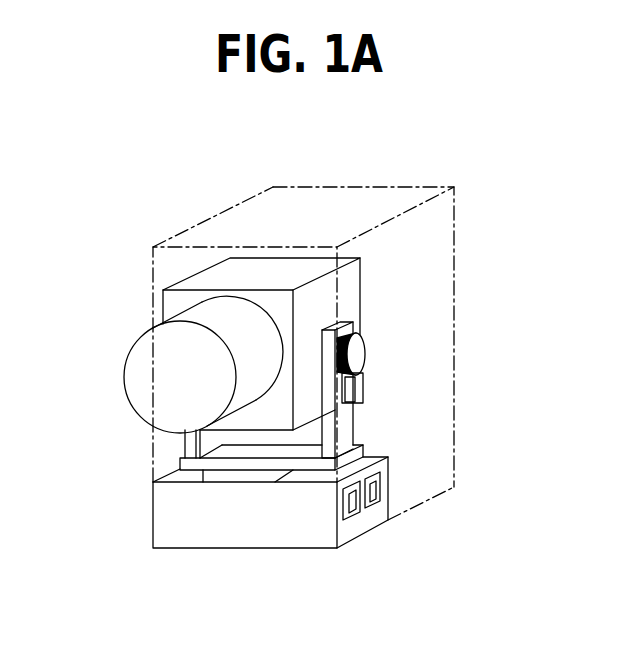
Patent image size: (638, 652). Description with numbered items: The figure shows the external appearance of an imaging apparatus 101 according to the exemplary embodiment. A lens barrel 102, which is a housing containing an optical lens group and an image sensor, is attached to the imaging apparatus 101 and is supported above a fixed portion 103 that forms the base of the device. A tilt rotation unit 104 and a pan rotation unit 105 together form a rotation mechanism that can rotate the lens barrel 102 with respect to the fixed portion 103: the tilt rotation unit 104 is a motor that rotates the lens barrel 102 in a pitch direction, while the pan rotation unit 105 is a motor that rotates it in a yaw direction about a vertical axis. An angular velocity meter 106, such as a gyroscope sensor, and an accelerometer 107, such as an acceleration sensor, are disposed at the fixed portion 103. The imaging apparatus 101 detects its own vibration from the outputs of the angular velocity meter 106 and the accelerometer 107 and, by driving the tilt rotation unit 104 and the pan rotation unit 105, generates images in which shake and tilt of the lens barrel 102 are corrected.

The imaging apparatus 101 is at (322, 187).
The lens barrel 102 is at (200, 272).
The fixed portion 103 is at (153, 515).
The tilt rotation unit 104 is at (362, 375).
The pan rotation unit 105 is at (255, 482).
The angular velocity meter 106 is at (381, 483).
The accelerometer 107 is at (358, 514).